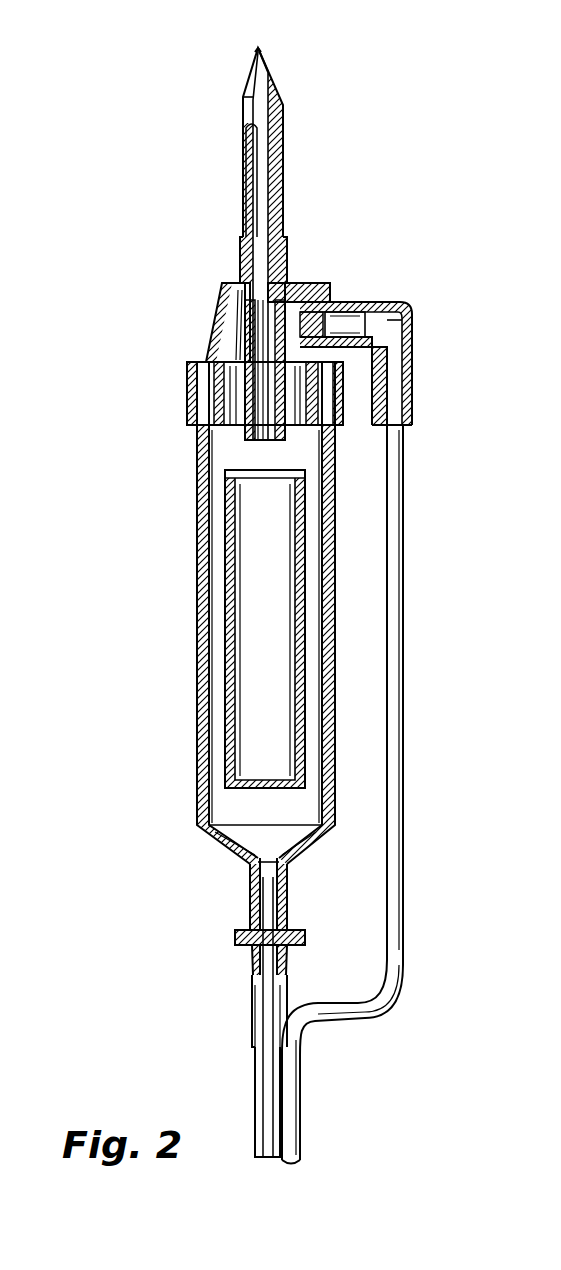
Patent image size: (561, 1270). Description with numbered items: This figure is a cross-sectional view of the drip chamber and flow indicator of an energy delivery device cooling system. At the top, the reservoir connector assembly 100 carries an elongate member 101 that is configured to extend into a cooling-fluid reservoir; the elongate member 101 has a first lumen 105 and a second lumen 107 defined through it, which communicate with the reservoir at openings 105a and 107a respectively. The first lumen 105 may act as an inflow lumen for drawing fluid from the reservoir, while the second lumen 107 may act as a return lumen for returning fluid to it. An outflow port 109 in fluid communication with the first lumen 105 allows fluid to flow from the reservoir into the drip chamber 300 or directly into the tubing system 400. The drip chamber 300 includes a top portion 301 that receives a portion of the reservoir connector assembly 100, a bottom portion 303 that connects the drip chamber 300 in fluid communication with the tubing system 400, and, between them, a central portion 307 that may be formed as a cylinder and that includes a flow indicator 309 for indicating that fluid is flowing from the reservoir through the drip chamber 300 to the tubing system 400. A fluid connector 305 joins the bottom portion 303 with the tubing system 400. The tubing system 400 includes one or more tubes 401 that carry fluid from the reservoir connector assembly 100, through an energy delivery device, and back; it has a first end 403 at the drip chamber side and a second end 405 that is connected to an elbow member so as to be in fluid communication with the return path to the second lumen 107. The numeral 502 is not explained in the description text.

The reservoir connector assembly 100 is at (186, 330).
The elongate member 101 is at (290, 162).
The first lumen 105 is at (252, 124).
The opening 105a is at (238, 84).
The second lumen 107 is at (263, 72).
The opening 107a is at (262, 46).
The outflow port 109 is at (248, 450).
The drip chamber 300 is at (196, 570).
The top portion 301 is at (188, 376).
The bottom portion 303 is at (250, 896).
The fluid connector 305 is at (300, 930).
The central portion 307 is at (197, 635).
The flow indicator 309 is at (331, 617).
The tubing system 400 is at (304, 1106).
The tube 401 is at (405, 455).
The first end 403 is at (252, 985).
The second end 405 is at (408, 372).
The elbow port 502 is at (412, 303).